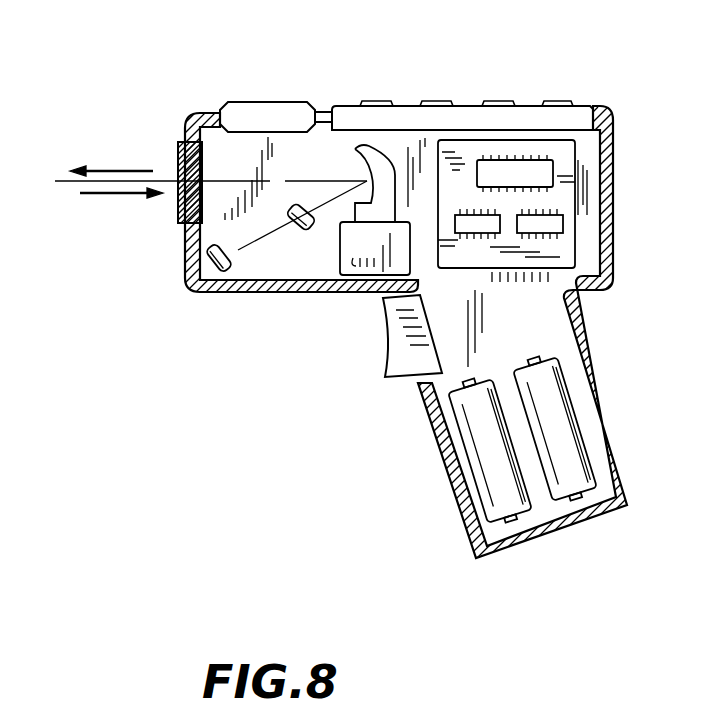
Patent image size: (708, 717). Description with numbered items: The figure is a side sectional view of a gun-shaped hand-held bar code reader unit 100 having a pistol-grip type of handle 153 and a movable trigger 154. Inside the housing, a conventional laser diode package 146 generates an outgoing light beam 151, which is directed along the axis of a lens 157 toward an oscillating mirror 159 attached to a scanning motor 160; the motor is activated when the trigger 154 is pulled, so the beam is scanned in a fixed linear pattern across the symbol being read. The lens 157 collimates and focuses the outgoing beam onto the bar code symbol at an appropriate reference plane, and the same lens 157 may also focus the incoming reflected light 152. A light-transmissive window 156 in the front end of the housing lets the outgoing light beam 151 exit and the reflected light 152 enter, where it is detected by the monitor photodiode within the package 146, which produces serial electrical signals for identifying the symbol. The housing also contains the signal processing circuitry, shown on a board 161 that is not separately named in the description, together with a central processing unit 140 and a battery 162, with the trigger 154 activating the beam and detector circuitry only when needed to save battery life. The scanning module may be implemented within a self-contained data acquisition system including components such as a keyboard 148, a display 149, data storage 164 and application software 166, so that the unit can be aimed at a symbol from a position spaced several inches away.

The reader unit 100 is at (351, 443).
The central processing unit (CPU) 140 is at (488, 168).
The laser diode package 146 is at (214, 279).
The keyboard 148 is at (527, 108).
The display 149 is at (277, 110).
The outgoing light beam 151 is at (134, 164).
The reflected light 152 is at (113, 198).
The handle 153 is at (450, 493).
The trigger 154 is at (388, 342).
The window 156 is at (178, 143).
The lens 157 is at (303, 203).
The oscillating mirror 159 is at (387, 147).
The scanning motor 160 is at (350, 277).
The circuit board 161 is at (572, 158).
The battery 162 is at (577, 433).
The data storage 164 is at (553, 225).
The application software 166 is at (480, 226).